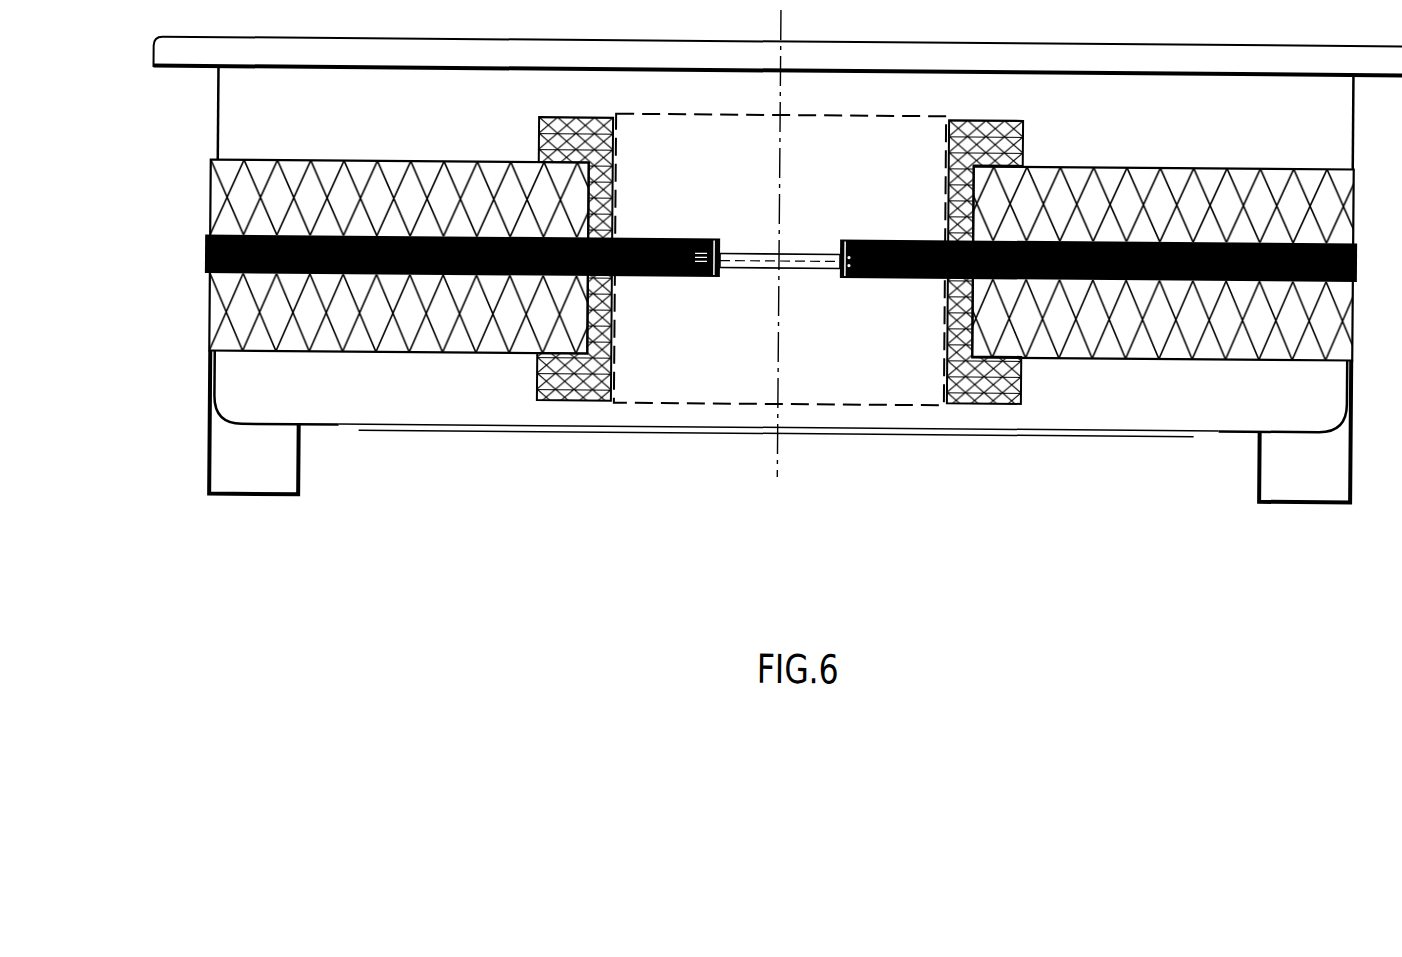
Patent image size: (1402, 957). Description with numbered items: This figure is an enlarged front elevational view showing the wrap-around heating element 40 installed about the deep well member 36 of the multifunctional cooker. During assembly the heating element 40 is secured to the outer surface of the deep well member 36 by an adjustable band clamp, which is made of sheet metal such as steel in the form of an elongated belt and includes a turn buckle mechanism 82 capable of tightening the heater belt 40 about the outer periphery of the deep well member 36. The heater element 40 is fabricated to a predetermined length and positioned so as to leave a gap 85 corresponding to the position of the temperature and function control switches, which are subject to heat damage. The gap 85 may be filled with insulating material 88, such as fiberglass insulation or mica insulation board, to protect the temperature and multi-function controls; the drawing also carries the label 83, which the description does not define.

The deep well member 36 is at (295, 120).
The wrap-around heating element 40 is at (253, 336).
The turn buckle mechanism 82 is at (778, 267).
The shaft 83 is at (183, 257).
The gap 85 is at (926, 160).
The insulating material 88 is at (987, 365).